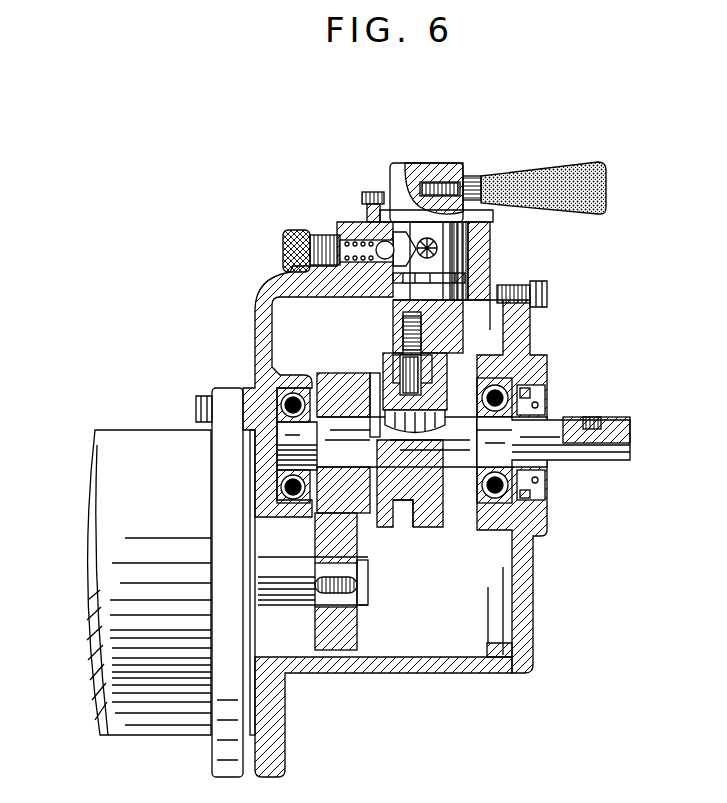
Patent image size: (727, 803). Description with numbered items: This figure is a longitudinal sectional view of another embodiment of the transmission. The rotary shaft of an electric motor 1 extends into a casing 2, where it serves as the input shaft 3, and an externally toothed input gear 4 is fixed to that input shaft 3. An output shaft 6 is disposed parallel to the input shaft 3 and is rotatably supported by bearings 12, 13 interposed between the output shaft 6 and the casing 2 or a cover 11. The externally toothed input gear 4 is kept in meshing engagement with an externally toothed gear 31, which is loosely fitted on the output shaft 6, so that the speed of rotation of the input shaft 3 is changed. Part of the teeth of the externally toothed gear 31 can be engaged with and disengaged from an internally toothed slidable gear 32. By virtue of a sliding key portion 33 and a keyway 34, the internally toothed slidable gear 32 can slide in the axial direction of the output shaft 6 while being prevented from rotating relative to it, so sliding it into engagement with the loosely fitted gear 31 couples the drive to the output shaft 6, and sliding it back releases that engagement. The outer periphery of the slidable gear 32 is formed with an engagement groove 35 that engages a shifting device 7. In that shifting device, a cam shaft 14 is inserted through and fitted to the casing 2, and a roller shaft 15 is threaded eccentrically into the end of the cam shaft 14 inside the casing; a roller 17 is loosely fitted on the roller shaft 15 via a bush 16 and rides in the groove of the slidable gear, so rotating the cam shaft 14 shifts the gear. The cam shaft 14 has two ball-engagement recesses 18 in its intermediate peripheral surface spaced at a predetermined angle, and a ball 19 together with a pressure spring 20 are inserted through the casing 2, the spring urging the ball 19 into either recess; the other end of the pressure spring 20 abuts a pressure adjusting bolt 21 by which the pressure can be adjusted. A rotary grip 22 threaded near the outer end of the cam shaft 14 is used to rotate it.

The electric motor 1 is at (146, 443).
The casing 2 is at (260, 322).
The input shaft 3 is at (283, 590).
The externally toothed input gear 4 is at (356, 620).
The output shaft 6 is at (593, 446).
The shifting device 7 is at (423, 162).
The cover 11 is at (528, 333).
The bearing 12 is at (292, 503).
The bearing 13 is at (478, 484).
The cam shaft 14 is at (397, 170).
The roller shaft 15 is at (463, 343).
The bush 16 is at (403, 347).
The roller 17 is at (430, 370).
The ball-engagement recess 18 is at (425, 238).
The ball 19 is at (377, 246).
The pressure spring 20 is at (352, 240).
The pressure adjusting bolt 21 is at (298, 234).
The rotary grip 22 is at (541, 167).
The externally toothed gear 31 is at (330, 373).
The internally toothed slidable gear 32 is at (385, 522).
The sliding key portion 33 is at (415, 384).
The keyway 34 is at (432, 428).
The engagement groove 35 is at (416, 503).